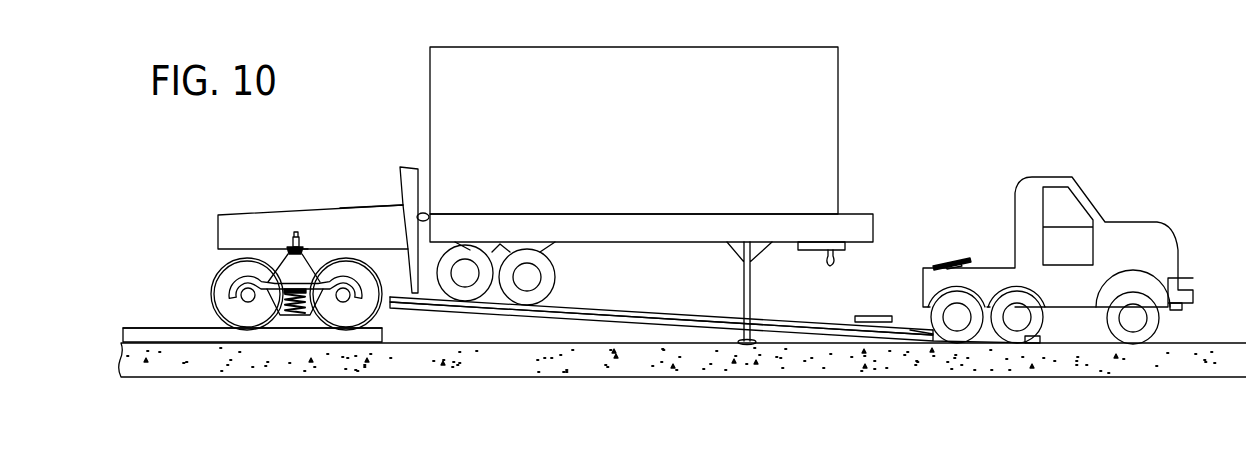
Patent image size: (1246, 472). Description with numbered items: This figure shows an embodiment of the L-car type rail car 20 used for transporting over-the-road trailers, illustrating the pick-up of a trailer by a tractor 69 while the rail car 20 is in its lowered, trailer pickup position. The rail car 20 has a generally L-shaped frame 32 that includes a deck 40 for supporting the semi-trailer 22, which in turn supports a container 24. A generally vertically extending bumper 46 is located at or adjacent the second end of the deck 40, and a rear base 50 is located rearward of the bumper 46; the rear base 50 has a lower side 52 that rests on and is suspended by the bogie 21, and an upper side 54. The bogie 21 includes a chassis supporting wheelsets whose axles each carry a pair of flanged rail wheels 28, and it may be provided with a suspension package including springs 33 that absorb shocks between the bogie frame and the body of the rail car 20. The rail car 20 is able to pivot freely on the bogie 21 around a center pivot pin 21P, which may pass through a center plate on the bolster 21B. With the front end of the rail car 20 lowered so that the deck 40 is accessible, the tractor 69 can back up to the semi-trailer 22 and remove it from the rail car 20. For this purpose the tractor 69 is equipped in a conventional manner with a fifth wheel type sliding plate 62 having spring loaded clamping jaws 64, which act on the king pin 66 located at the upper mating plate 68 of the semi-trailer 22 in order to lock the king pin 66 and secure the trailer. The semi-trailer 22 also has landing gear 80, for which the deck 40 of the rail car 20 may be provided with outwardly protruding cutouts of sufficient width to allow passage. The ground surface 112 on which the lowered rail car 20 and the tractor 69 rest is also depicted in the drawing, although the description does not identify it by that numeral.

The rail car 20 is at (478, 316).
The bogie 21 is at (256, 272).
The bolster 21B is at (298, 253).
The center pivot pin 21P is at (257, 188).
The semi-trailer 22 is at (853, 215).
The container 24 is at (838, 88).
The flanged rail wheels 28 is at (212, 332).
The frame 32 is at (590, 320).
The springs 33 is at (299, 318).
The deck 40 is at (178, 328).
The bumper 46 is at (418, 189).
The rear base 50 is at (228, 237).
The lower side 52 is at (308, 222).
The upper side 54 is at (357, 206).
The fifth wheel sliding plate 62 is at (958, 259).
The clamping jaws 64 is at (972, 258).
The king pin 66 is at (824, 260).
The upper mating plate 68 is at (841, 251).
The tractor 69 is at (1171, 248).
The landing gear 80 is at (751, 280).
The ground 112 is at (688, 345).